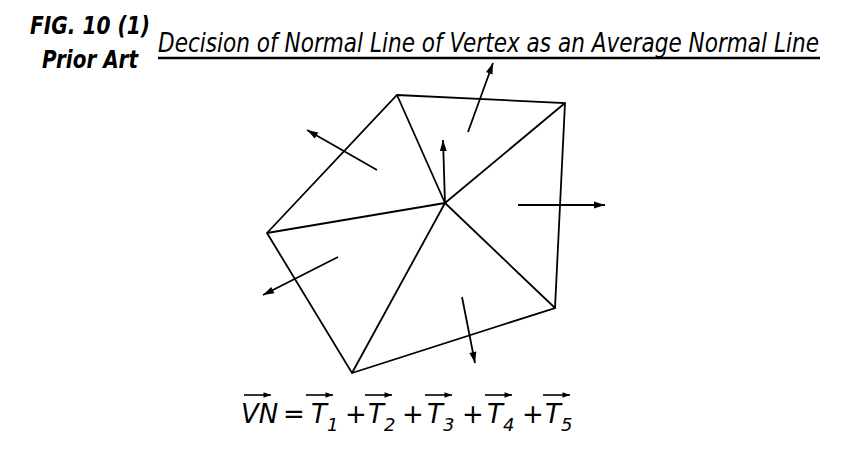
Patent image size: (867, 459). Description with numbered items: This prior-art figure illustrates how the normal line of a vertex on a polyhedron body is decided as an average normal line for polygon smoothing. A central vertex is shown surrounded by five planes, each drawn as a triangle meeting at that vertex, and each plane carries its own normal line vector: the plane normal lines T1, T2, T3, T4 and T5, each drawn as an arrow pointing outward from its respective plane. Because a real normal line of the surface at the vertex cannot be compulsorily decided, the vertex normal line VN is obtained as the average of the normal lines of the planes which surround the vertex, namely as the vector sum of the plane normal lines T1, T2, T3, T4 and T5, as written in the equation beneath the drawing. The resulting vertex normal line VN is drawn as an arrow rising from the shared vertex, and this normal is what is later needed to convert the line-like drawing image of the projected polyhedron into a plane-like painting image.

The vertex normal line VN is at (438, 151).
The plane normal line T1 is at (561, 183).
The plane normal line T2 is at (481, 322).
The plane normal line T3 is at (303, 286).
The plane normal line T4 is at (342, 170).
The plane normal line T5 is at (490, 105).